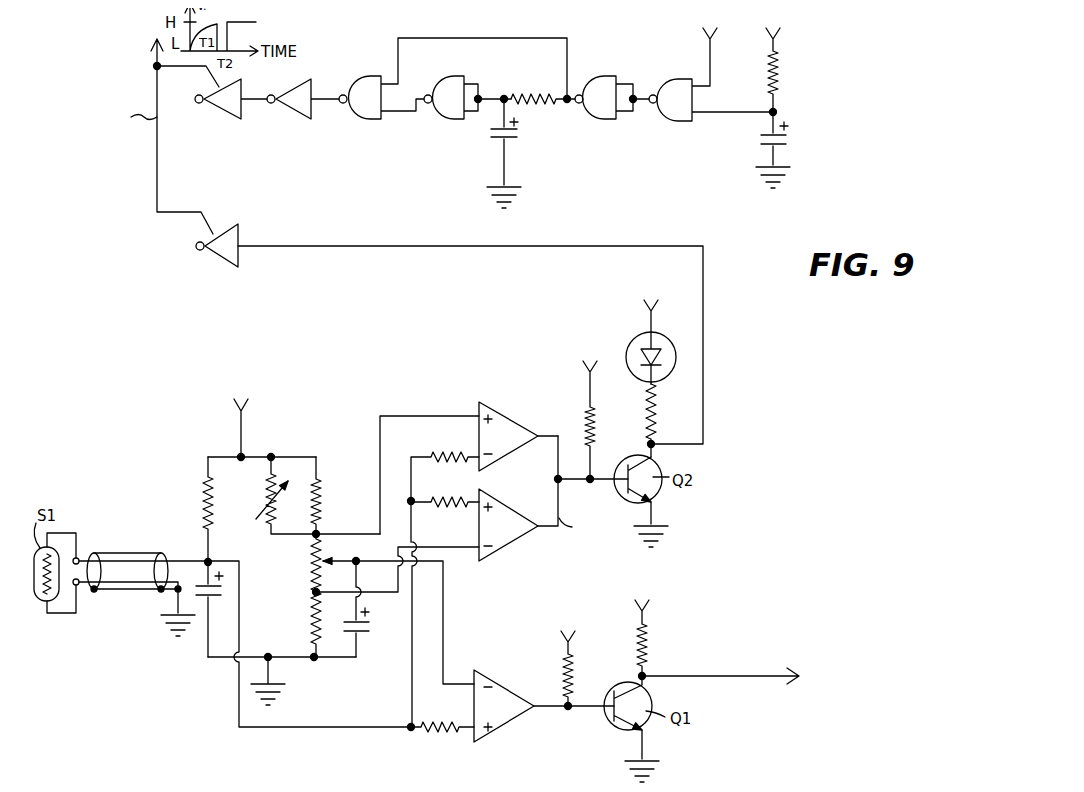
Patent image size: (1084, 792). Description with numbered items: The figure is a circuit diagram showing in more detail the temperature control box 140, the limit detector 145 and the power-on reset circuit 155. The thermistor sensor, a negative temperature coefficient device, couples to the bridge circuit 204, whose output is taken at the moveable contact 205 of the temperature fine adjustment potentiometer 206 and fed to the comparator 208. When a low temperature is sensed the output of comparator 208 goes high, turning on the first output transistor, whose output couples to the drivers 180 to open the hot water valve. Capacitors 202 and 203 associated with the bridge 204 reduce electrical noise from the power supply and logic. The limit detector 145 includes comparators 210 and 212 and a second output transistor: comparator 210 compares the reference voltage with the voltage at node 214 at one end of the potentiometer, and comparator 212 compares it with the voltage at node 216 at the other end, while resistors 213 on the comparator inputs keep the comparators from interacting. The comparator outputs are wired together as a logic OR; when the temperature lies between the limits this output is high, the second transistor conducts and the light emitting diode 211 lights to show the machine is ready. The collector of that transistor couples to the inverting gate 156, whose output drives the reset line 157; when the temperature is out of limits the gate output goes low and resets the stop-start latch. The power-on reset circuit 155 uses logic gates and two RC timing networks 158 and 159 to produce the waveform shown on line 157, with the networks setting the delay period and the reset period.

The reset line 157 is at (156, 176).
The RC timing network 158 is at (527, 122).
The RC timing network 159 is at (790, 113).
The power-on reset circuit 155 is at (394, 236).
The inverting gate 156 is at (224, 252).
The light emitting diode 211 is at (637, 343).
The comparator 210 is at (508, 448).
The comparator 212 is at (508, 542).
The resistors 213 is at (460, 498).
The limit detector 145 is at (535, 537).
The node 214 is at (318, 533).
The bridge circuit 204 is at (286, 583).
The potentiometer 206 is at (313, 568).
The node 216 is at (310, 596).
The moveable contact 205 is at (341, 560).
The capacitor 203 is at (358, 633).
The capacitor 202 is at (200, 613).
The temperature control box 140 is at (381, 713).
The comparator 208 is at (503, 709).
The drivers 180 is at (773, 680).